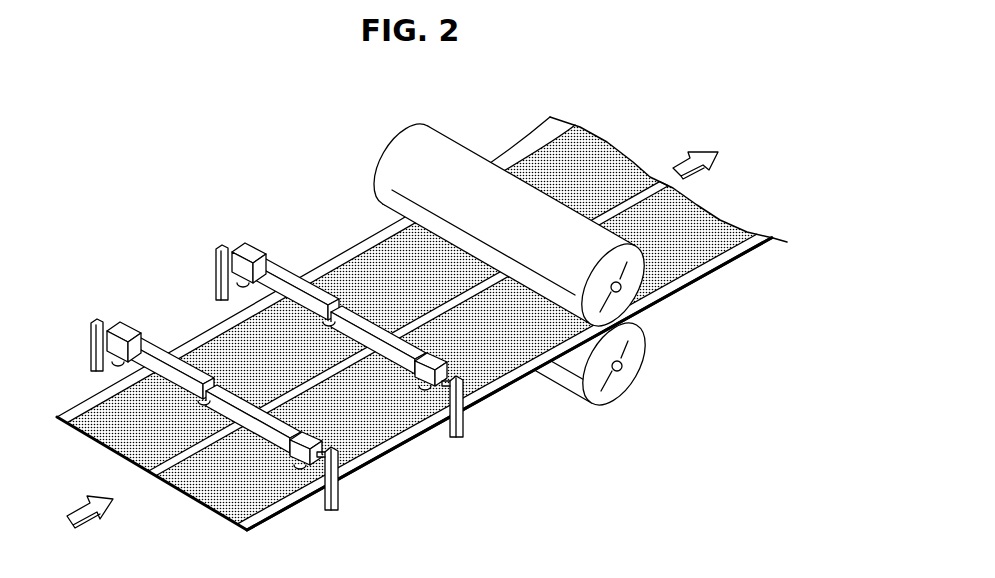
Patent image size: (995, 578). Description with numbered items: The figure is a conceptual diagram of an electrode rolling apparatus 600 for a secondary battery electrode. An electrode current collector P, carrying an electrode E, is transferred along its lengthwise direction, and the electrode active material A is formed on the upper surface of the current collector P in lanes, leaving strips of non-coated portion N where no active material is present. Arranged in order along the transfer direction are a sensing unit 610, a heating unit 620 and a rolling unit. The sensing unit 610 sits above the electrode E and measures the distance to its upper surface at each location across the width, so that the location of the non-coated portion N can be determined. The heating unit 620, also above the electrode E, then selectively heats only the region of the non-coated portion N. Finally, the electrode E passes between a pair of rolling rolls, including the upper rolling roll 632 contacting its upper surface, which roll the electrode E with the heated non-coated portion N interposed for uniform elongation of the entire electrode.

The electrode rolling apparatus 600 is at (223, 149).
The sensing unit 610 is at (126, 328).
The heating unit 620 is at (250, 252).
The rolling roll 632 is at (623, 302).
The electrode active material A is at (237, 357).
The non-coated portion N is at (60, 418).
The electrode current collector P is at (408, 335).
The electrode E is at (407, 462).